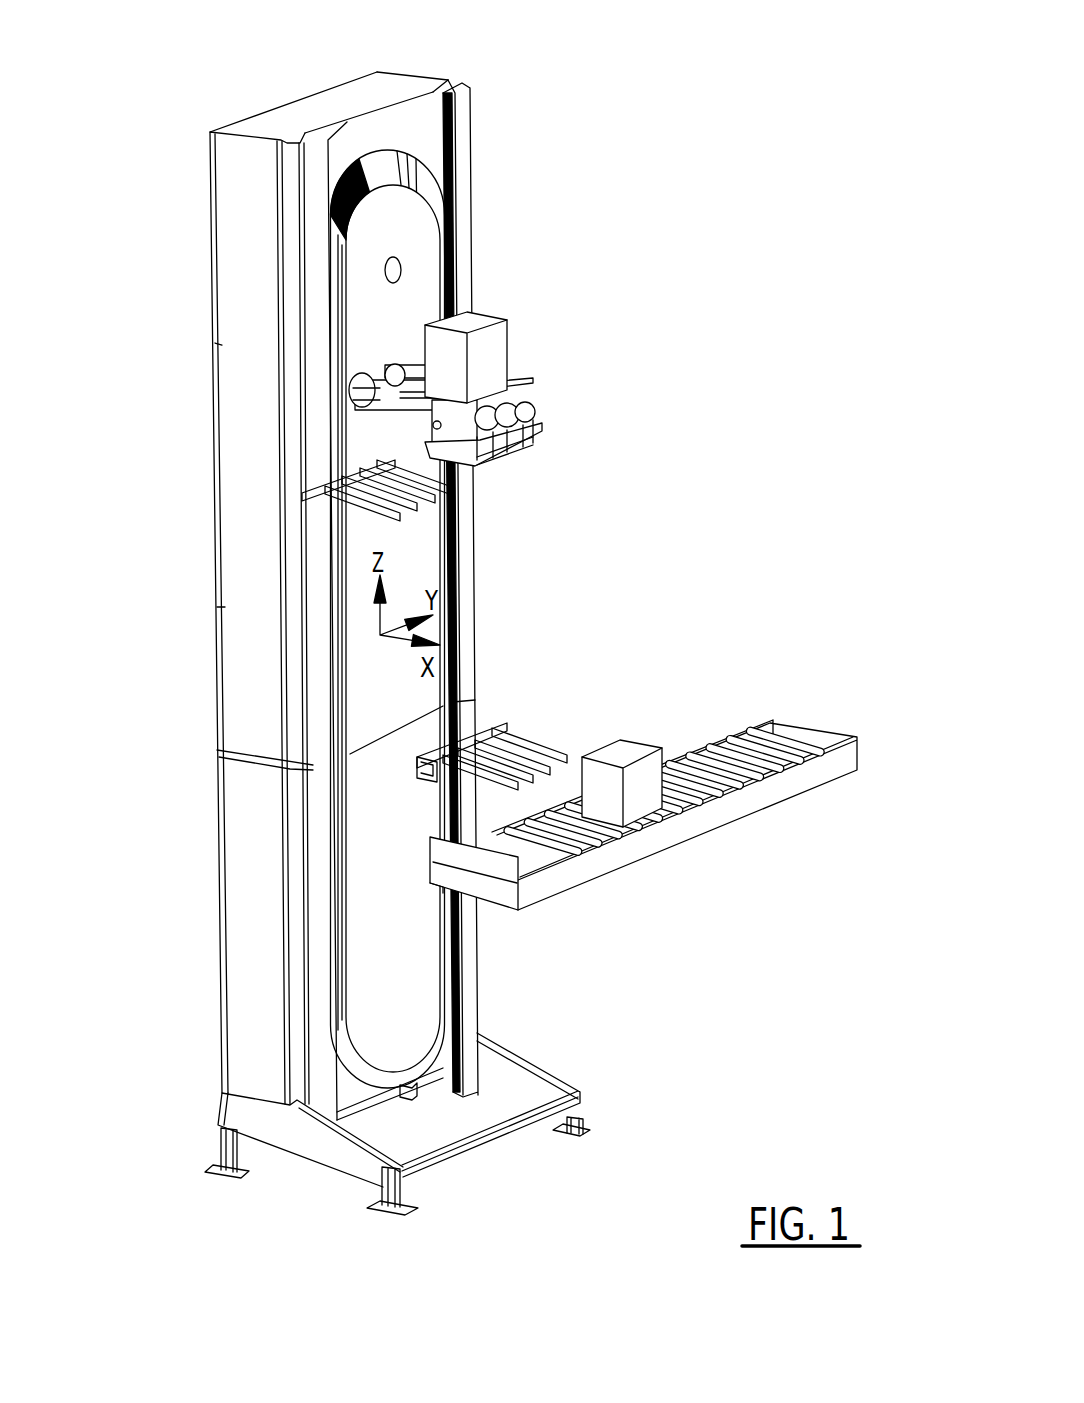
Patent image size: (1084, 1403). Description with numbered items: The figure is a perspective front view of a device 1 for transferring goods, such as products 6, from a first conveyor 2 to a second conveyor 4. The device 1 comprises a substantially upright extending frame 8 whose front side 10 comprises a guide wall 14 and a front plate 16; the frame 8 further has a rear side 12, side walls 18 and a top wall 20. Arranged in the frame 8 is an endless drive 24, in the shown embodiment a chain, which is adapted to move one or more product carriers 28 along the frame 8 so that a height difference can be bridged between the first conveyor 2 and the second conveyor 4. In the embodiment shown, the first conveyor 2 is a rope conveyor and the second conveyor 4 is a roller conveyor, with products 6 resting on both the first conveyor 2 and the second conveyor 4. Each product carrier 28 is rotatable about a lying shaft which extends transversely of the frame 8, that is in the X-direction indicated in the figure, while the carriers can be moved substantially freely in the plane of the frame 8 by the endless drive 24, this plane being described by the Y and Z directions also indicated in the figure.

The device 1 is at (699, 402).
The first conveyor 2 is at (530, 387).
The second conveyor 4 is at (754, 780).
The products 6 is at (500, 337).
The frame 8 is at (272, 68).
The front side 10 is at (507, 167).
The rear side 12 is at (184, 114).
The guide wall 14 is at (380, 123).
The front plate 16 is at (433, 247).
The side walls 18 is at (499, 77).
The top wall 20 is at (393, 87).
The endless drive 24 is at (357, 180).
The product carriers 28 is at (345, 538).